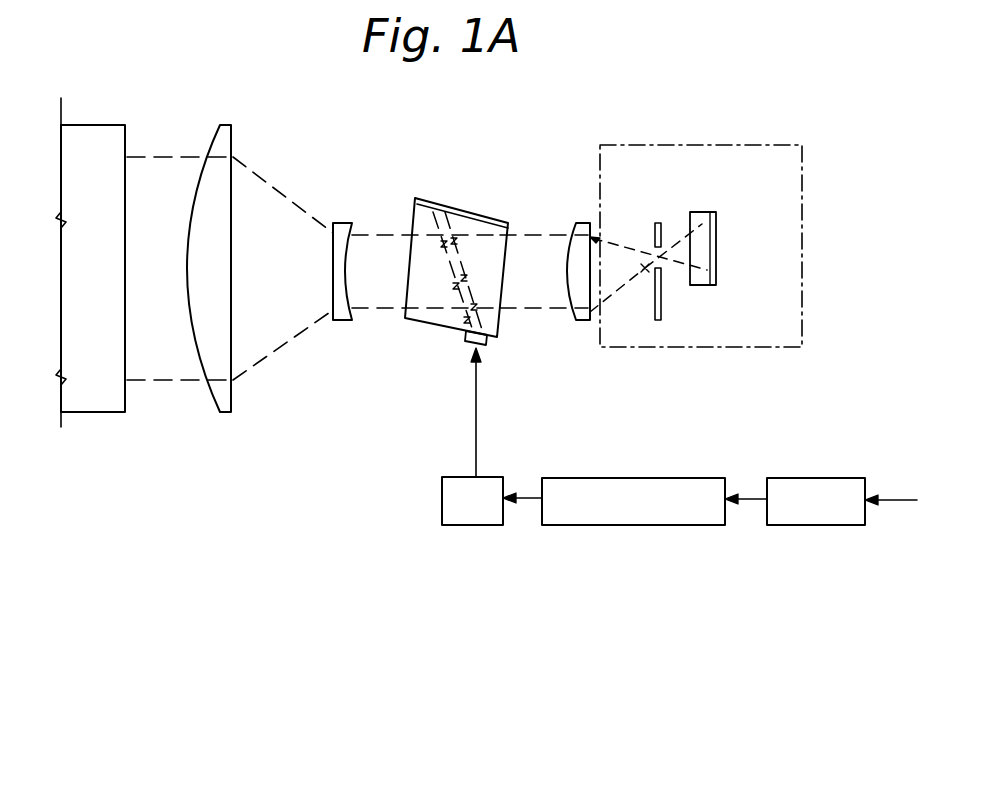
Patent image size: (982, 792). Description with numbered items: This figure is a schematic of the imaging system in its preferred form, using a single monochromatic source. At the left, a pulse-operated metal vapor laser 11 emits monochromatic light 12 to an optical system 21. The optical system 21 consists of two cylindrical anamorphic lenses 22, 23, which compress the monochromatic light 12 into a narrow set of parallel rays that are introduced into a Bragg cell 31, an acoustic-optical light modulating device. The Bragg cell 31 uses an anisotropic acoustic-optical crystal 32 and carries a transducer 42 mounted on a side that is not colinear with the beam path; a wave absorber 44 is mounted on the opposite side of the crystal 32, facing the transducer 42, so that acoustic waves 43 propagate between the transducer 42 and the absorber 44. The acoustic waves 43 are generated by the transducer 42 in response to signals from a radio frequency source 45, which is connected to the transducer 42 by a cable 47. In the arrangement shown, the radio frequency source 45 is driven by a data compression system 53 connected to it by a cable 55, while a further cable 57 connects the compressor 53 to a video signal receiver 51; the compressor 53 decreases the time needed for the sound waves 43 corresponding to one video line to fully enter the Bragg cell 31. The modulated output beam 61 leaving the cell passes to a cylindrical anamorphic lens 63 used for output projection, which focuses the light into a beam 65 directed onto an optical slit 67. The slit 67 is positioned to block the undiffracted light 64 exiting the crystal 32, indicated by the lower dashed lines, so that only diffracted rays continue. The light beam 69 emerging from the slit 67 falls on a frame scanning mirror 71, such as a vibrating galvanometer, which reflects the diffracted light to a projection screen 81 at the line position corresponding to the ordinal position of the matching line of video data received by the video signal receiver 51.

The pulse-operated metal vapor laser 11 is at (98, 123).
The monochromatic light 12 is at (150, 155).
The optical system 21 is at (278, 283).
The cylindrical anamorphic lens 22 is at (233, 140).
The cylindrical anamorphic lens 23 is at (337, 222).
The Bragg cell 31 is at (432, 292).
The anisotropic acoustic-optical crystal 32 is at (490, 245).
The transducer 42 is at (487, 348).
The acoustic waves 43 is at (462, 307).
The wave absorber 44 is at (422, 197).
The radio frequency source 45 is at (442, 497).
The cable 47 is at (473, 432).
The video signal receiver 51 is at (820, 527).
The data compression system 53 is at (630, 527).
The cable 55 is at (530, 503).
The cable 57 is at (755, 503).
The modulated output beam 61 is at (538, 263).
The cylindrical anamorphic lens 63 is at (585, 222).
The undiffracted light 64 is at (632, 290).
The beam 65 is at (628, 245).
The optical slit 67 is at (657, 323).
The light beam 69 is at (683, 247).
The frame scanning mirror 71 is at (717, 238).
The projection screen 81 is at (803, 295).